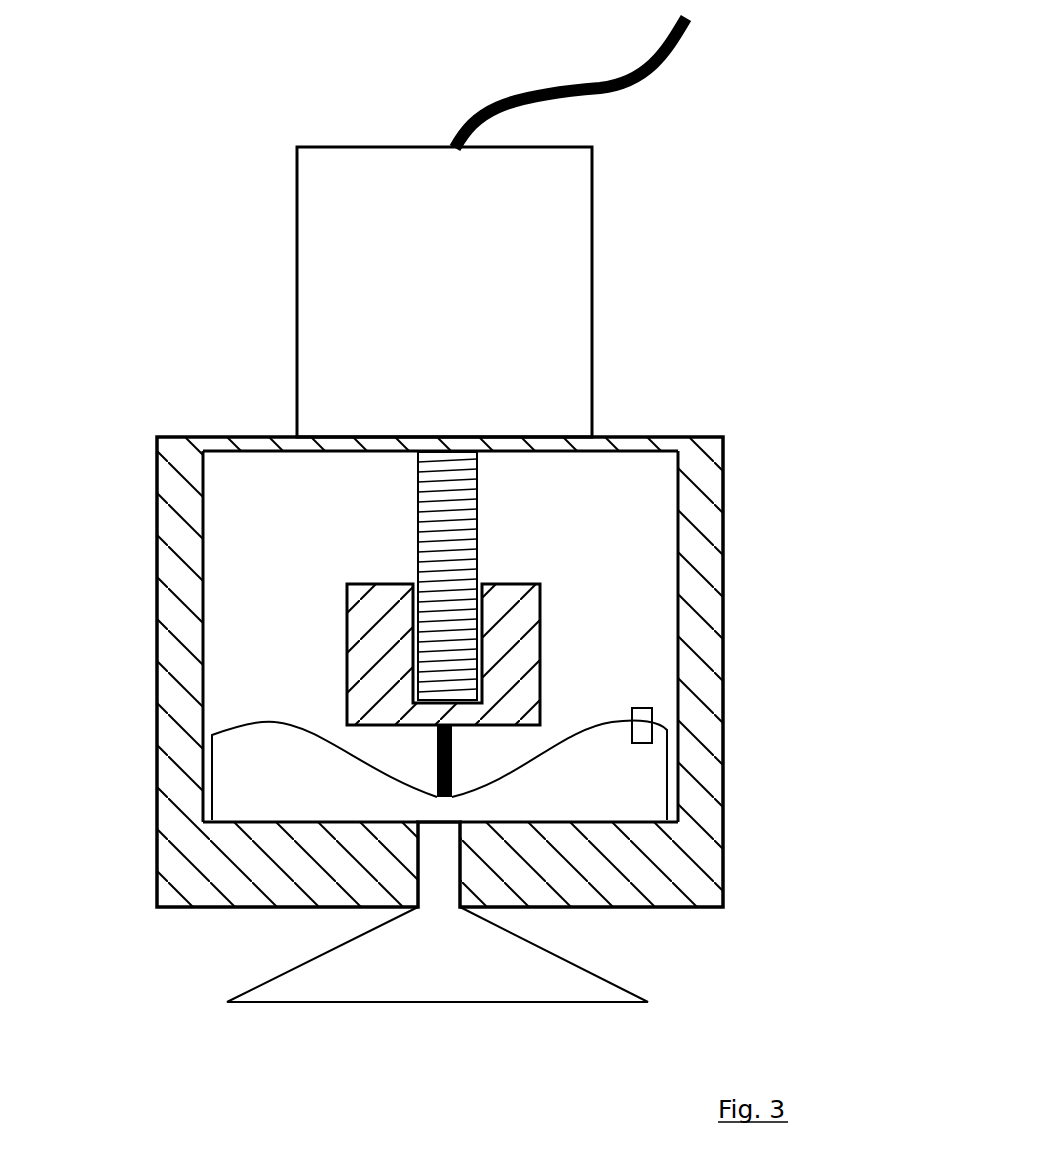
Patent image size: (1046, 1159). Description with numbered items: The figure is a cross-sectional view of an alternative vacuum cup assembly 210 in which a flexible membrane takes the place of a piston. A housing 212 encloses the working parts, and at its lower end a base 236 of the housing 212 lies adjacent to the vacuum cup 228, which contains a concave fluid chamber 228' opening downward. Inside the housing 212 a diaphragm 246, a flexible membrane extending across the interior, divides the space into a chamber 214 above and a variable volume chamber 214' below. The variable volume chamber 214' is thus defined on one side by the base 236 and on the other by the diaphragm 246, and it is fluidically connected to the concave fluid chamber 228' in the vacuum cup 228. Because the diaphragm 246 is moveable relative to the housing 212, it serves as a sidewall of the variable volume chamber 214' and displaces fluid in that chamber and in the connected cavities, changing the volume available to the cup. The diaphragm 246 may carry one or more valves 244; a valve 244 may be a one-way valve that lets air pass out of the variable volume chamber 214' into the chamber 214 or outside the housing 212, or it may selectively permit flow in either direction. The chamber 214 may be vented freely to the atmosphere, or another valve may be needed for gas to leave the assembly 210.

The cup assembly 210 is at (501, 574).
The housing 212 is at (512, 709).
The chamber 214 is at (532, 636).
The variable volume chamber 214' is at (359, 717).
The vacuum cup 228 is at (491, 1019).
The concave fluid chamber 228' is at (440, 1054).
The base 236 is at (235, 896).
The valve 244 is at (652, 719).
The diaphragm 246 is at (235, 727).